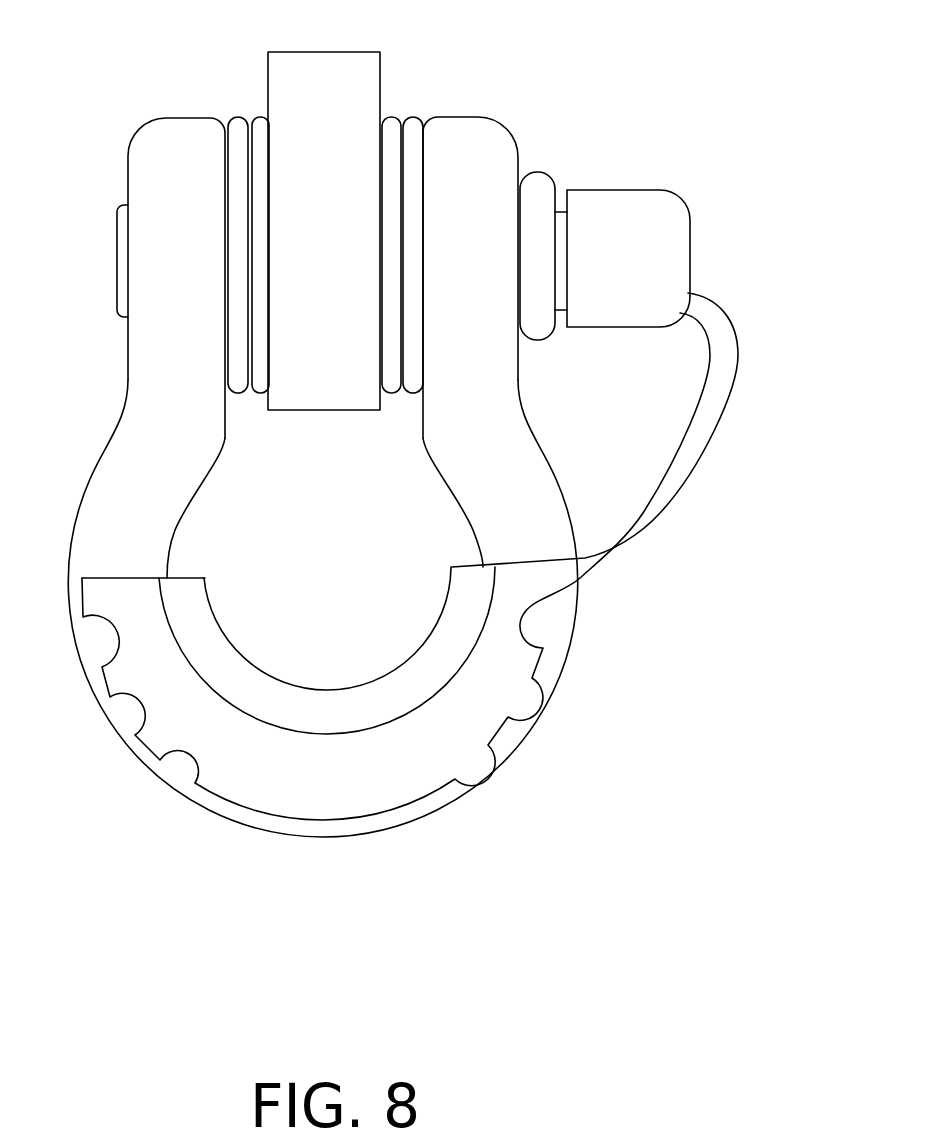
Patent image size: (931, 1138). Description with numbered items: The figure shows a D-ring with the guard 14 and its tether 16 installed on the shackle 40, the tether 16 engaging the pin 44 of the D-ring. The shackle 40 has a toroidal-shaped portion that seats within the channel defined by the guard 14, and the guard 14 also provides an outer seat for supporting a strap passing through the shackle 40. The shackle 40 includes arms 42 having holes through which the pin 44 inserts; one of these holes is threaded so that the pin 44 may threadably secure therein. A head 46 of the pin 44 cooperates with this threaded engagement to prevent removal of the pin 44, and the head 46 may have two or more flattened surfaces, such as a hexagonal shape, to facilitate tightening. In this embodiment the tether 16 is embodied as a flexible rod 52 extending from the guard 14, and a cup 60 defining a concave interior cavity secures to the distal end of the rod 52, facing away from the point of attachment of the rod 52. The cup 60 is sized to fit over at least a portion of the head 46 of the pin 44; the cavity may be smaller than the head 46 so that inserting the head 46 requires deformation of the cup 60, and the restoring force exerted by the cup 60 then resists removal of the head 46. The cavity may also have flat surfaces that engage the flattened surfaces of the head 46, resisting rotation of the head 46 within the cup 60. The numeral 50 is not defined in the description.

The guard 14 is at (313, 668).
The tether 16 is at (737, 447).
The shackle 40 is at (127, 450).
The arms 42 is at (192, 143).
The pin 44 is at (120, 266).
The head 46 is at (540, 185).
The pin 50 is at (318, 65).
The flexible rod 52 is at (725, 373).
The cup 60 is at (643, 207).